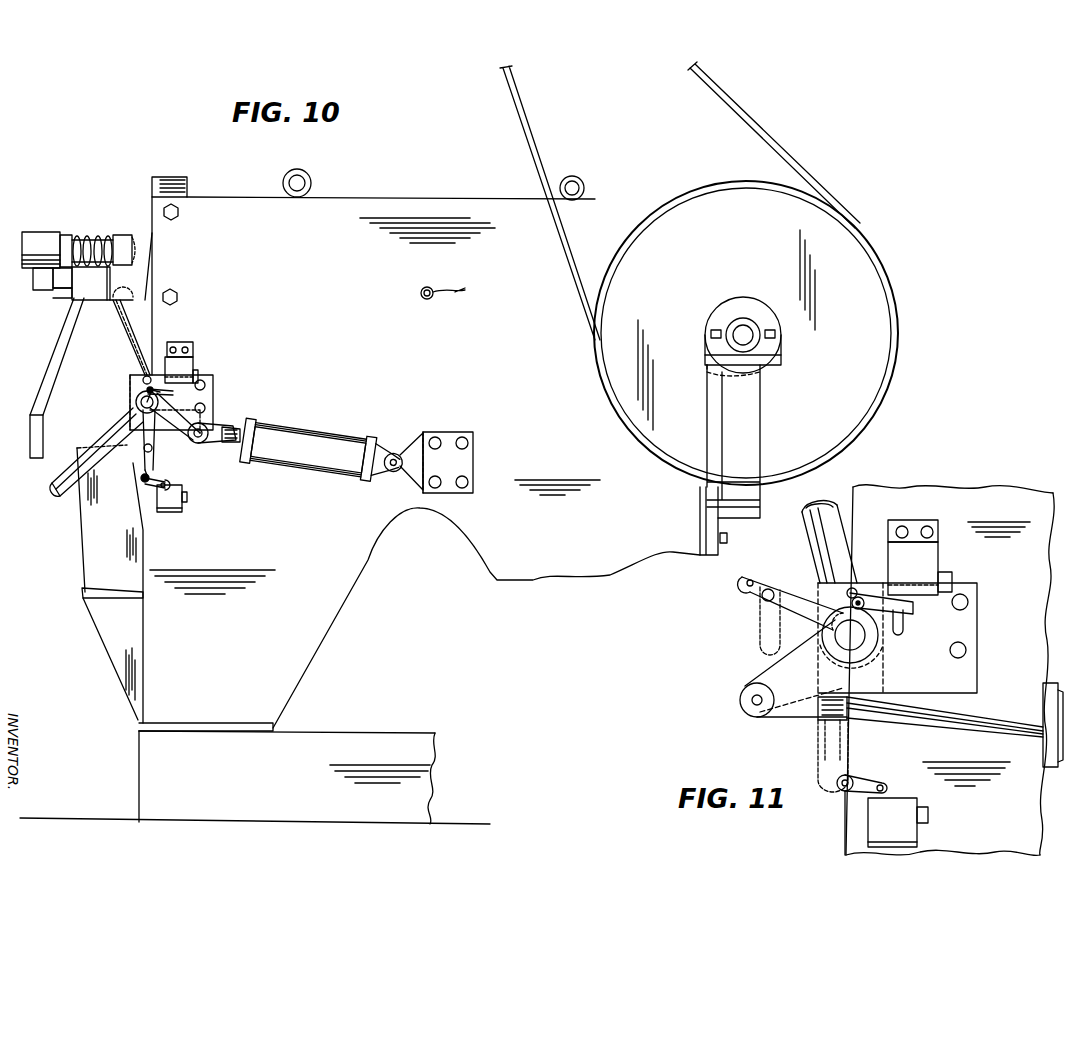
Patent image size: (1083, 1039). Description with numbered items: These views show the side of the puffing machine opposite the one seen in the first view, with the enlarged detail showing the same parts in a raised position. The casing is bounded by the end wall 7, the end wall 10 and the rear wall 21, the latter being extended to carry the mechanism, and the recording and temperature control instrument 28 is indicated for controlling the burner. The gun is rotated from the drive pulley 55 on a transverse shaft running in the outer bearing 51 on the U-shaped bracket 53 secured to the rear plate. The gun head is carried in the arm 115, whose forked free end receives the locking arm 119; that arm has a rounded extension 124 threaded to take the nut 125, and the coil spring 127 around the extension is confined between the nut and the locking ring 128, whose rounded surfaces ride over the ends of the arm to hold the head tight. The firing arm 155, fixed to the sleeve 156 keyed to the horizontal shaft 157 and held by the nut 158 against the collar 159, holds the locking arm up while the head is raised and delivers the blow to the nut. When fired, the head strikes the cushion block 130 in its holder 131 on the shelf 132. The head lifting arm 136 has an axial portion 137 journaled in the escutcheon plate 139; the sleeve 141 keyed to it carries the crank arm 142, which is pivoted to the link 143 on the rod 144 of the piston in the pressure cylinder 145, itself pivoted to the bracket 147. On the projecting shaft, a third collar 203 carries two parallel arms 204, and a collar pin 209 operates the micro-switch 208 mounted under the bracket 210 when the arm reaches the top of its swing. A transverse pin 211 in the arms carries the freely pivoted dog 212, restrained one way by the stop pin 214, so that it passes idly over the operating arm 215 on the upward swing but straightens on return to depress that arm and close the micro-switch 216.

In FIG. 10, the end wall 7 is at (702, 556).
In FIG. 10, the end wall 10 is at (183, 166).
In FIG. 10, the rear wall 21 is at (487, 523).
In FIG. 11, the rear wall 21 is at (1025, 507).
In FIG. 10, the recording and temperature control instrument 28 is at (425, 300).
In FIG. 10, the outer bearing 51 is at (748, 320).
In FIG. 10, the U-shaped bracket 53 is at (757, 430).
In FIG. 10, the drive pulley 55 is at (832, 237).
In FIG. 10, the arm 115 is at (143, 270).
In FIG. 10, the locking arm 119 is at (135, 233).
In FIG. 10, the rounded extension 124 is at (92, 283).
In FIG. 10, the nut 125 is at (52, 218).
In FIG. 10, the coil spring 127 is at (80, 237).
In FIG. 10, the locking ring 128 is at (115, 237).
In FIG. 10, the cushion block 130 is at (93, 447).
In FIG. 10, the holder 131 is at (80, 503).
In FIG. 10, the shelf 132 is at (100, 605).
In FIG. 10, the head lifting arm 136 is at (67, 475).
In FIG. 11, the head lifting arm 136 is at (845, 500).
In FIG. 10, the axial portion 137 is at (157, 392).
In FIG. 10, the escutcheon plate 139 is at (213, 385).
In FIG. 11, the escutcheon plate 139 is at (977, 607).
In FIG. 10, the sleeve 141 is at (145, 374).
In FIG. 11, the sleeve 141 is at (878, 635).
In FIG. 10, the crank arm 142 is at (192, 420).
In FIG. 11, the crank arm 142 is at (782, 662).
In FIG. 10, the link 143 is at (210, 453).
In FIG. 11, the link 143 is at (800, 710).
In FIG. 10, the rod 144 is at (263, 423).
In FIG. 11, the rod 144 is at (977, 713).
In FIG. 10, the pressure cylinder 145 is at (328, 445).
In FIG. 11, the pressure cylinder 145 is at (1051, 715).
In FIG. 10, the bracket 147 is at (437, 432).
In FIG. 10, the firing arm 155 is at (53, 358).
In FIG. 10, the sleeve 156 is at (100, 304).
In FIG. 10, the horizontal shaft 157 is at (53, 276).
In FIG. 10, the nut 158 is at (63, 292).
In FIG. 10, the collar 159 is at (122, 300).
In FIG. 10, the third collar 203 is at (143, 392).
In FIG. 11, the third collar 203 is at (865, 643).
In FIG. 10, the parallel arms 204 is at (140, 420).
In FIG. 11, the parallel arms 204 is at (793, 607).
In FIG. 10, the micro-switch 208 is at (187, 363).
In FIG. 11, the micro-switch 208 is at (933, 563).
In FIG. 10, the pin 209 is at (137, 408).
In FIG. 11, the pin 209 is at (897, 623).
In FIG. 10, the bracket 210 is at (193, 350).
In FIG. 11, the bracket 210 is at (938, 540).
In FIG. 10, the transverse pin 211 is at (153, 450).
In FIG. 11, the transverse pin 211 is at (771, 590).
In FIG. 10, the dog 212 is at (157, 472).
In FIG. 11, the dog 212 is at (767, 640).
In FIG. 10, the stop pin 214 is at (141, 477).
In FIG. 11, the stop pin 214 is at (752, 580).
In FIG. 10, the operating arm 215 is at (145, 485).
In FIG. 11, the operating arm 215 is at (863, 782).
In FIG. 10, the micro-switch 216 is at (182, 502).
In FIG. 11, the micro-switch 216 is at (893, 807).